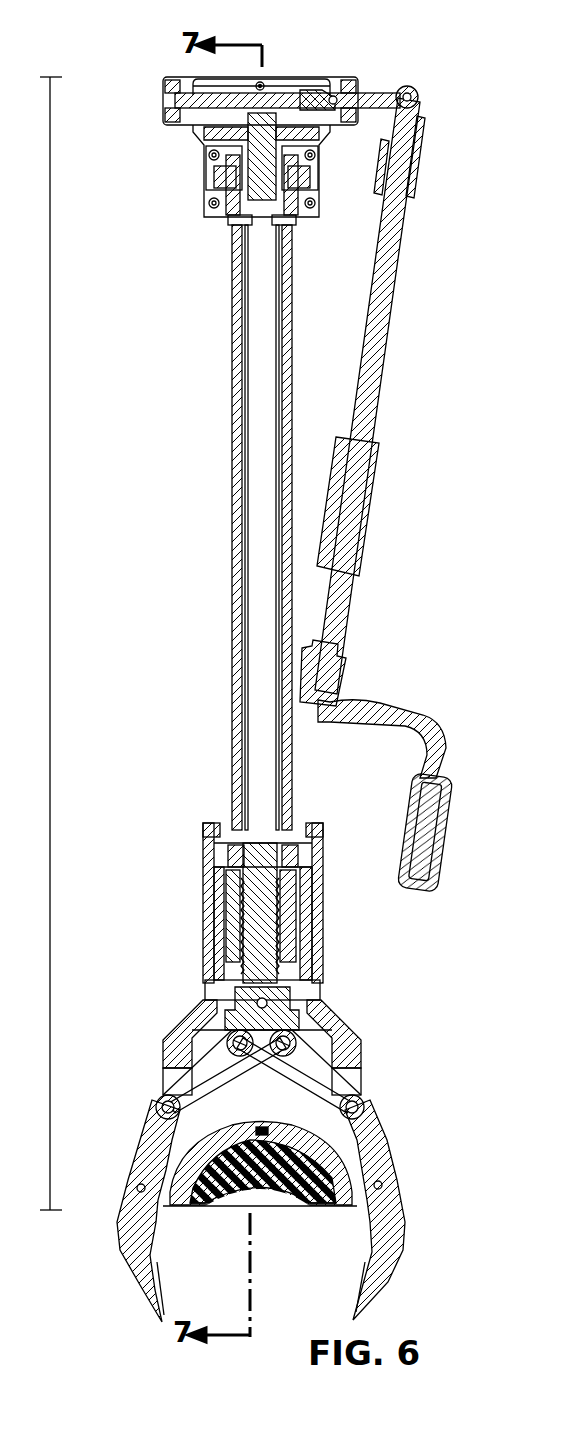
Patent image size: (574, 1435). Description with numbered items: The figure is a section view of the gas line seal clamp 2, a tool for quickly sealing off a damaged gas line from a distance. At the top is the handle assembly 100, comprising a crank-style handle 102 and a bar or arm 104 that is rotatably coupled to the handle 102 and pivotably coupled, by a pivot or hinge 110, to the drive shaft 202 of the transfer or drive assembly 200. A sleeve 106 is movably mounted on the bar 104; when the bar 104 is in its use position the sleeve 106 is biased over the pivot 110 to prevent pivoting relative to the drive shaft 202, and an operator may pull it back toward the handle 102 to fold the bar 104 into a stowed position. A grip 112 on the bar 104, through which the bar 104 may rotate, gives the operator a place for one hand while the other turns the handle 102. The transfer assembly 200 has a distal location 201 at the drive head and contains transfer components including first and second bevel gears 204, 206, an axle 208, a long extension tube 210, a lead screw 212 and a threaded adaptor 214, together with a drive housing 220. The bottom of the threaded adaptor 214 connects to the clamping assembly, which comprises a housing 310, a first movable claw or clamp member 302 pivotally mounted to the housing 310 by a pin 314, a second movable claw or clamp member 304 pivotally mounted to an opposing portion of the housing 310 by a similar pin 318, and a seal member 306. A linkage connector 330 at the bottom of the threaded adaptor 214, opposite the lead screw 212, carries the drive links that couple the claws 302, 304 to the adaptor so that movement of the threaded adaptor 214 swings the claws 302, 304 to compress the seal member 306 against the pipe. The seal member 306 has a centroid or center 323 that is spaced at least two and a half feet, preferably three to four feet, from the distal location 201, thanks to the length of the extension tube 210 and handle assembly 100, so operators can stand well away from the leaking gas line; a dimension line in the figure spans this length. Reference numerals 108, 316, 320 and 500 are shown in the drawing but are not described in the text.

The gas line seal clamp 2 is at (148, 53).
The handle assembly 100 is at (414, 461).
The handle 102 is at (442, 722).
The bar or arm 104 is at (385, 327).
The sleeve 106 is at (419, 190).
The upper clamp plate 108 is at (418, 152).
The pivot or hinge 110 is at (412, 90).
The grip 112 is at (364, 508).
The transfer or drive assembly 200 is at (135, 78).
The distal location 201 is at (268, 75).
The drive shaft 202 is at (372, 95).
The first bevel gear 204 is at (306, 90).
The second bevel gear 206 is at (172, 100).
The axle 208 is at (228, 188).
The extension tube 210 is at (262, 296).
The lead screw 212 is at (245, 920).
The threaded adaptor 214 is at (288, 905).
The drive housing 220 is at (208, 170).
The first movable claw or clamp member 302 is at (115, 1249).
The second movable claw or clamp member 304 is at (400, 1219).
The seal member 306 is at (260, 1190).
The housing 310 is at (278, 1090).
The pin 314 is at (140, 1172).
The first pivot pin 316 is at (160, 1103).
The pin 318 is at (382, 1184).
The second pivot pin 320 is at (362, 1108).
The centroid or center 323 is at (215, 1208).
The linkage connector 330 is at (283, 1012).
The overall length 500 is at (55, 545).